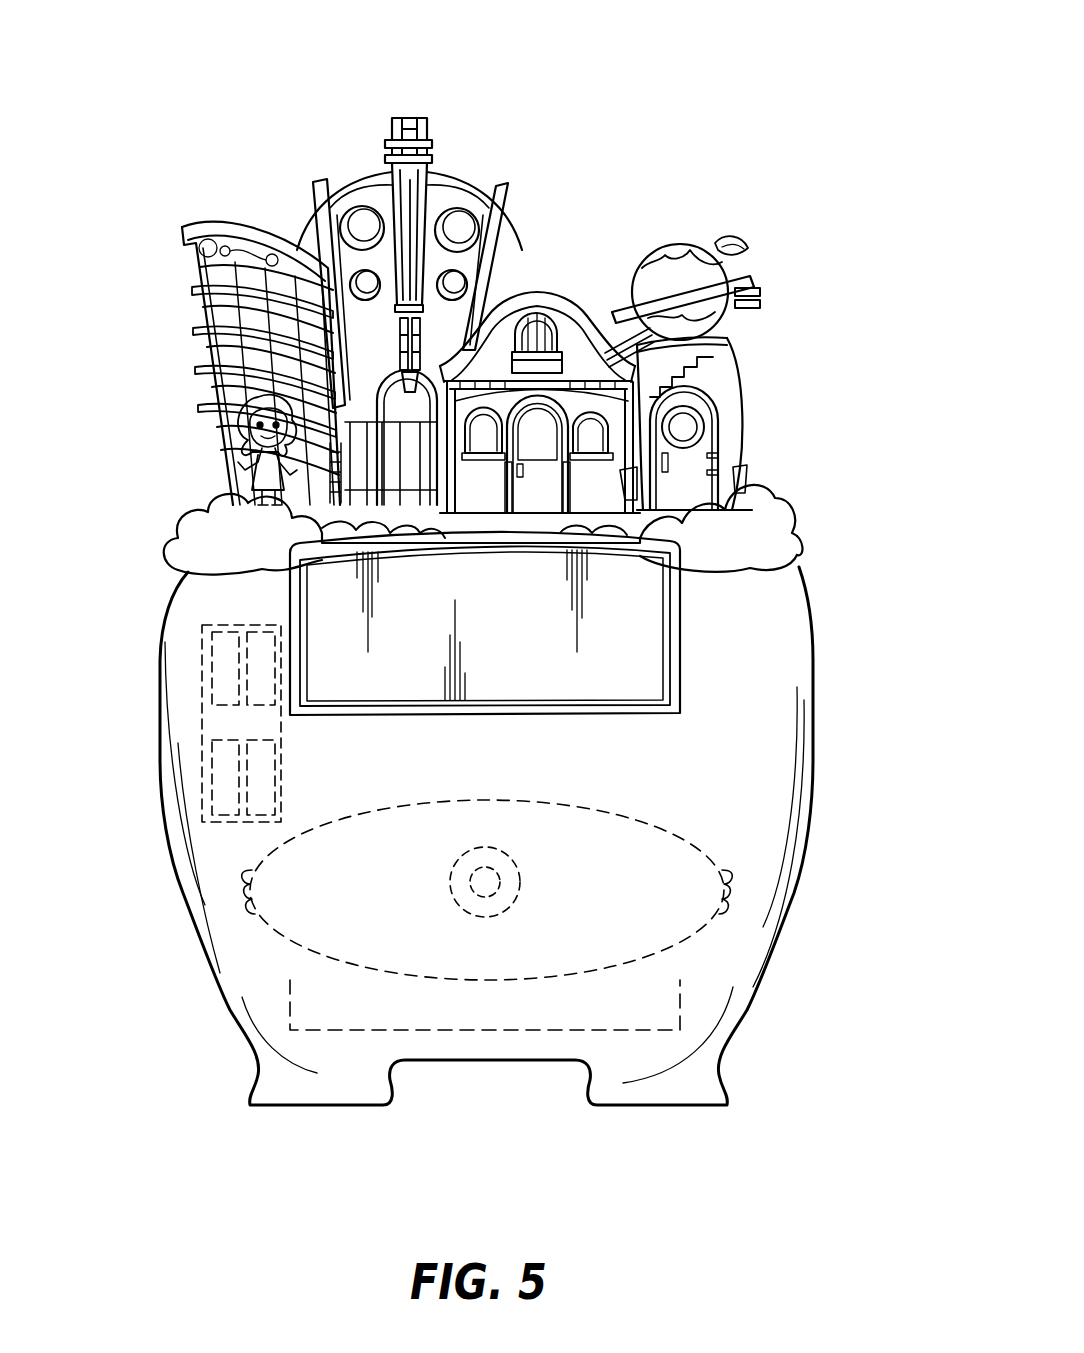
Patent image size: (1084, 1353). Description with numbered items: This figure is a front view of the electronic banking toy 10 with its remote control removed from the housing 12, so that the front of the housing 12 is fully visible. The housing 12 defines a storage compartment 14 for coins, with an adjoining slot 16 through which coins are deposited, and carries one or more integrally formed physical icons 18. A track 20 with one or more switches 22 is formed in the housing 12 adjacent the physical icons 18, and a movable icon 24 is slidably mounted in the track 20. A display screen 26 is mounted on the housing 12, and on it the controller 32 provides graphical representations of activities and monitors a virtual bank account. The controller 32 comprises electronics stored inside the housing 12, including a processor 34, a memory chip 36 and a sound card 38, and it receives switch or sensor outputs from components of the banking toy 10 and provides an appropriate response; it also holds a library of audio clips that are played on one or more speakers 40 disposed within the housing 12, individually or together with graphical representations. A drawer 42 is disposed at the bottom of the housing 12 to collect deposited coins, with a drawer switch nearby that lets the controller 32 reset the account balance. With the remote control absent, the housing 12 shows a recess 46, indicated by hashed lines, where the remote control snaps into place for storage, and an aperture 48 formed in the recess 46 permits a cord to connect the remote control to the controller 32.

The electronic banking toy 10 is at (205, 82).
The housing 12 is at (782, 597).
The storage compartment 14 is at (787, 617).
The slot 16 is at (436, 165).
The physical icons 18 is at (627, 300).
The track 20 is at (582, 515).
The switches 22 is at (530, 507).
The movable icon 24 is at (297, 497).
The display screen 26 is at (637, 667).
The controller 32 is at (184, 723).
The processor 34 is at (222, 690).
The memory chip 36 is at (262, 700).
The sound card 38 is at (222, 800).
The speakers 40 is at (262, 810).
The drawer 42 is at (288, 1005).
The recess 46 is at (700, 940).
The aperture 48 is at (487, 880).